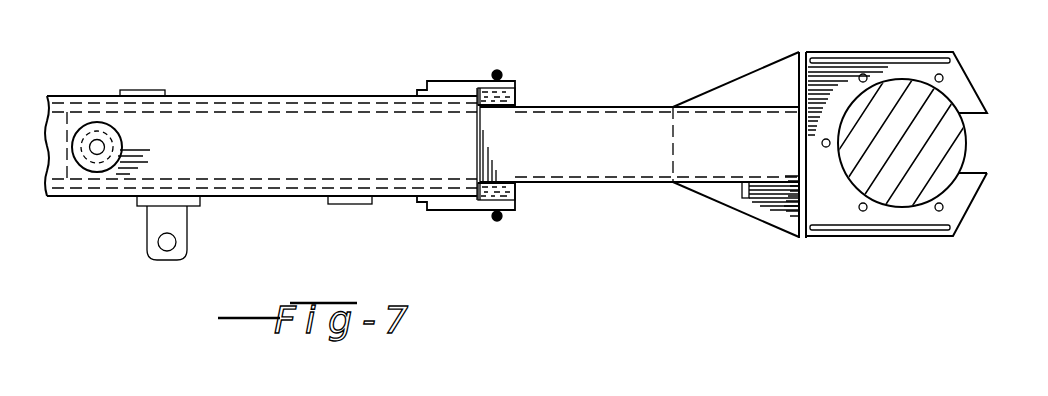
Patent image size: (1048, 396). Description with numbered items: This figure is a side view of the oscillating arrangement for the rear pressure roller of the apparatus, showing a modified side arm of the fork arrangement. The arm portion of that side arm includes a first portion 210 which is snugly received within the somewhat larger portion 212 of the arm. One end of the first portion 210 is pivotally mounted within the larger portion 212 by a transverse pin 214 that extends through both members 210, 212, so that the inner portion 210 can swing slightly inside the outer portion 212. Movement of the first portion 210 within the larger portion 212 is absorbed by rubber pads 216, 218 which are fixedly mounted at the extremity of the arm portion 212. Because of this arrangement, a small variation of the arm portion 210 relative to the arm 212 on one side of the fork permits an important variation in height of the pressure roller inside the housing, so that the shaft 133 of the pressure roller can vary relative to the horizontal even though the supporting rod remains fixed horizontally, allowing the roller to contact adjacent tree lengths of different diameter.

The shaft 133 is at (925, 106).
The first portion 210 is at (647, 120).
The larger portion 212 is at (315, 120).
The transverse pin 214 is at (100, 145).
The rubber pad 216 is at (515, 93).
The rubber pad 218 is at (515, 193).